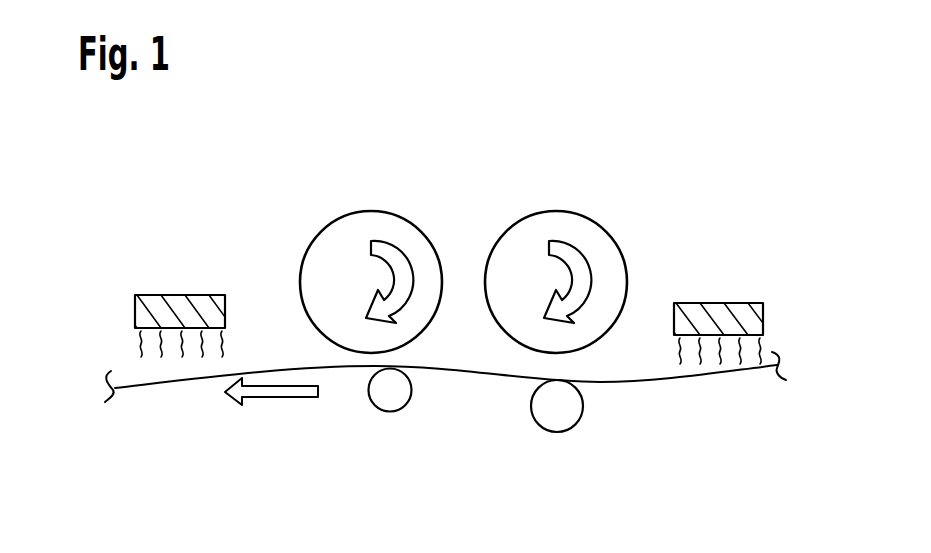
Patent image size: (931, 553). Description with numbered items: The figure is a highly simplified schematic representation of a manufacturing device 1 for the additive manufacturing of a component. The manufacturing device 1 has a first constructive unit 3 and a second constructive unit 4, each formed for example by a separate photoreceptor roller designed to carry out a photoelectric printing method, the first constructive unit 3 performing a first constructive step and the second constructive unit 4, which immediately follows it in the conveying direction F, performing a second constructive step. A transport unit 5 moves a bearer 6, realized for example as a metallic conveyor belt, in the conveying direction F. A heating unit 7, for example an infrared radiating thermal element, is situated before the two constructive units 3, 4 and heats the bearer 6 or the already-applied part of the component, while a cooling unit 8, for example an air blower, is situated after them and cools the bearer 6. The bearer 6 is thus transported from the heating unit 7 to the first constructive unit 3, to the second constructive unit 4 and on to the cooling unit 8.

The manufacturing device 1 is at (173, 194).
The first constructive unit 3 is at (553, 226).
The second constructive unit 4 is at (365, 226).
The transport unit 5 is at (558, 414).
The bearer 6 is at (684, 380).
The heating unit 7 is at (725, 316).
The cooling unit 8 is at (161, 311).
The conveying direction F is at (273, 393).